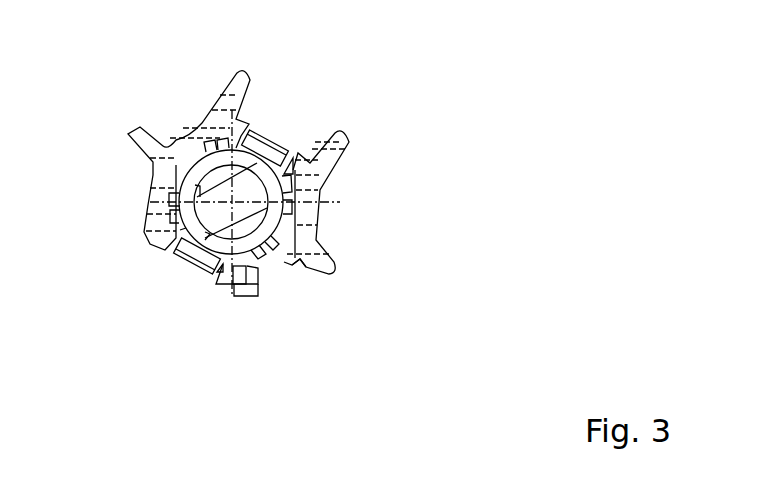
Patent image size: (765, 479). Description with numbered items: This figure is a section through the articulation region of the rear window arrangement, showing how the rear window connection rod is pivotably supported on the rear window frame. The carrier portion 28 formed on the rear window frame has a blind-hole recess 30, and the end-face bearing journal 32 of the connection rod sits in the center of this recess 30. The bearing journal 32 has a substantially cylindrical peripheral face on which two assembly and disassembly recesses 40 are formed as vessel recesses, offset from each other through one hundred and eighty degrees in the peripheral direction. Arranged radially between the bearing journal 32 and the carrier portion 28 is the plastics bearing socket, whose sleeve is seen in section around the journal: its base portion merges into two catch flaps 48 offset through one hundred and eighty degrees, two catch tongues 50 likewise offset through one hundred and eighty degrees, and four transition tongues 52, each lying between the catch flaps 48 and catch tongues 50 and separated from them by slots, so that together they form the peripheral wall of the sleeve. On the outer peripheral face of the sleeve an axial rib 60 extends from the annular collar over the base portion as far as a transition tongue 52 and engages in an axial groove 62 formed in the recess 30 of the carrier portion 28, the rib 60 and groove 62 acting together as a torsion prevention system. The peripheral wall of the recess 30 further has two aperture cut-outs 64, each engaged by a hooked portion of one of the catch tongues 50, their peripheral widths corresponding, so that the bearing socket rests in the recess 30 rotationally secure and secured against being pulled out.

The carrier portion 28 is at (318, 208).
The blind-hole recess 30 is at (148, 200).
The bearing journal 32 is at (210, 180).
The assembly and disassembly recesses 40 is at (162, 243).
The catch flaps 48 is at (196, 194).
The catch tongues 50 is at (253, 138).
The transition tongues 52 is at (220, 142).
The axial rib 60 is at (232, 297).
The axial groove 62 is at (241, 296).
The aperture cut-outs 64 is at (287, 173).